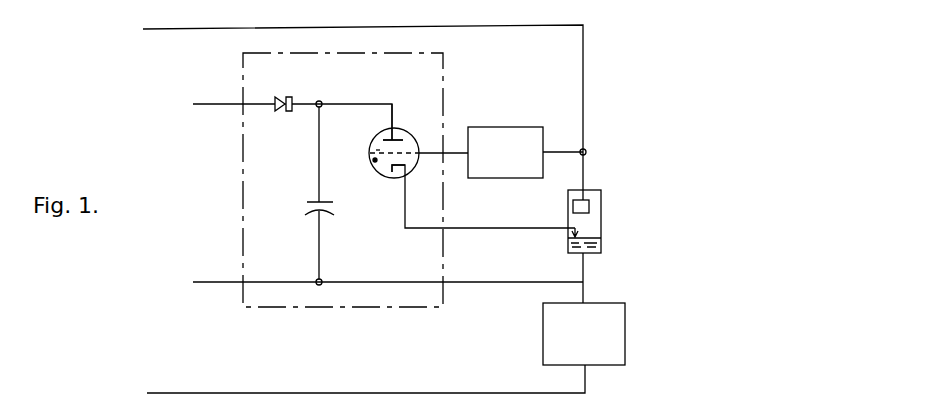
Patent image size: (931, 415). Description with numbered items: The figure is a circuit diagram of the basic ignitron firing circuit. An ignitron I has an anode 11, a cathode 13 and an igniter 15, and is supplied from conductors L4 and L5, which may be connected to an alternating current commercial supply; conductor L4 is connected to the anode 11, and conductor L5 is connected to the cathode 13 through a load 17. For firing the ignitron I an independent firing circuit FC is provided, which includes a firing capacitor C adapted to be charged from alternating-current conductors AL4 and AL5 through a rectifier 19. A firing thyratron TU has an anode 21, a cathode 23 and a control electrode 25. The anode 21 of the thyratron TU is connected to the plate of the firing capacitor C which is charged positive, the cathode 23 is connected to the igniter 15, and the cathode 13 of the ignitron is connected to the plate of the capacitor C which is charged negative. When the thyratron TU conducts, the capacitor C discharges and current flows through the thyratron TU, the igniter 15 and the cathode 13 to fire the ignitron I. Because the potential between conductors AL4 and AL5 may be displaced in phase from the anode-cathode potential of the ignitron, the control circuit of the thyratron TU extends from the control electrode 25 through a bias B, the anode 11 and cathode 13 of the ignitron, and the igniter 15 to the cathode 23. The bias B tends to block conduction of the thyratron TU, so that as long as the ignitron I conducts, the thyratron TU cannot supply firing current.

The anode 11 is at (589, 203).
The cathode 13 is at (601, 248).
The igniter 15 is at (580, 232).
The load 17 is at (625, 334).
The rectifier 19 is at (289, 96).
The anode 21 is at (402, 138).
The cathode 23 is at (391, 173).
The control electrode 25 is at (376, 149).
The conductor L4 is at (181, 28).
The conductor L5 is at (193, 394).
The alternating-current conductor AL4 is at (213, 105).
The alternating-current conductor AL5 is at (208, 282).
The firing circuit FC is at (243, 153).
The firing capacitor C is at (307, 209).
The firing thyratron TU is at (370, 153).
The bias B is at (504, 127).
The ignitron I is at (568, 208).